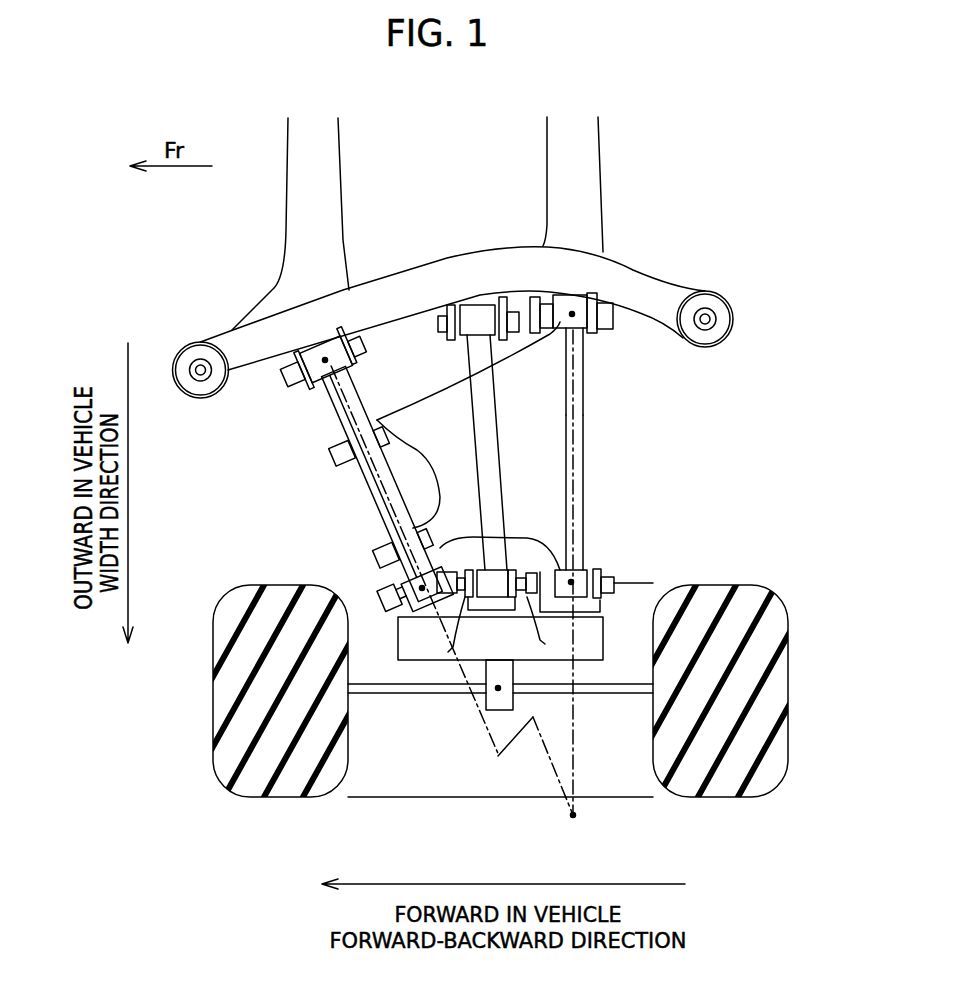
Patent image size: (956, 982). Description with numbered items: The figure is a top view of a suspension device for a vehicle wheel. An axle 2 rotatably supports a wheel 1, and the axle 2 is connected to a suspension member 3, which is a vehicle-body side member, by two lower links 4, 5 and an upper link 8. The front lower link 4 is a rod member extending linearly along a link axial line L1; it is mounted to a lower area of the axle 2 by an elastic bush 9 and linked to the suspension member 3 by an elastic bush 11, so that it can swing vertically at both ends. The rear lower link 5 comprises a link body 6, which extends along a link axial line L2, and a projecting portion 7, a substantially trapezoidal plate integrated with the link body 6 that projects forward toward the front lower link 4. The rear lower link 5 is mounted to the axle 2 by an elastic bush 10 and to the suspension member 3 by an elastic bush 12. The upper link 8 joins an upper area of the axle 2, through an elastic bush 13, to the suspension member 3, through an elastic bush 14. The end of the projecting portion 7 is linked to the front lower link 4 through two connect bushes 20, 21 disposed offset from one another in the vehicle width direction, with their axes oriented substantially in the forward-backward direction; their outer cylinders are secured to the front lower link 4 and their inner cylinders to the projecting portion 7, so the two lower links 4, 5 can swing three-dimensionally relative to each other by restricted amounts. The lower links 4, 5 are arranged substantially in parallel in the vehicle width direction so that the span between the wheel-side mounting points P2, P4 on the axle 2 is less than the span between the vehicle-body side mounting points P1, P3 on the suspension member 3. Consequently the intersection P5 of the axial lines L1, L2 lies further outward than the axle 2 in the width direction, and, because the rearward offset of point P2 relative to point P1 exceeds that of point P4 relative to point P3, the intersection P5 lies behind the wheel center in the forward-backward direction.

The wheel 1 is at (763, 723).
The axle 2 is at (415, 650).
The suspension member 3 is at (373, 290).
The front lower link 4 is at (372, 473).
The rear lower link 5 is at (610, 449).
The link body 6 is at (577, 430).
The projecting portion 7 is at (545, 398).
The upper link 8 is at (480, 430).
The elastic bush 9 is at (407, 590).
The elastic bush 10 is at (583, 570).
The elastic bush 11 is at (317, 370).
The elastic bush 12 is at (560, 292).
The elastic bush 13 is at (468, 603).
The elastic bush 14 is at (477, 317).
The connect bush 20 is at (390, 540).
The connect bush 21 is at (342, 434).
The vehicle-body side mounting point P1 is at (325, 360).
The wheel-side mounting point P2 is at (420, 590).
The vehicle-body side mounting point P3 is at (572, 314).
The wheel-side mounting point P4 is at (571, 582).
The intersection P5 is at (590, 814).
The link axial line L1 is at (380, 495).
The link axial line L2 is at (573, 473).